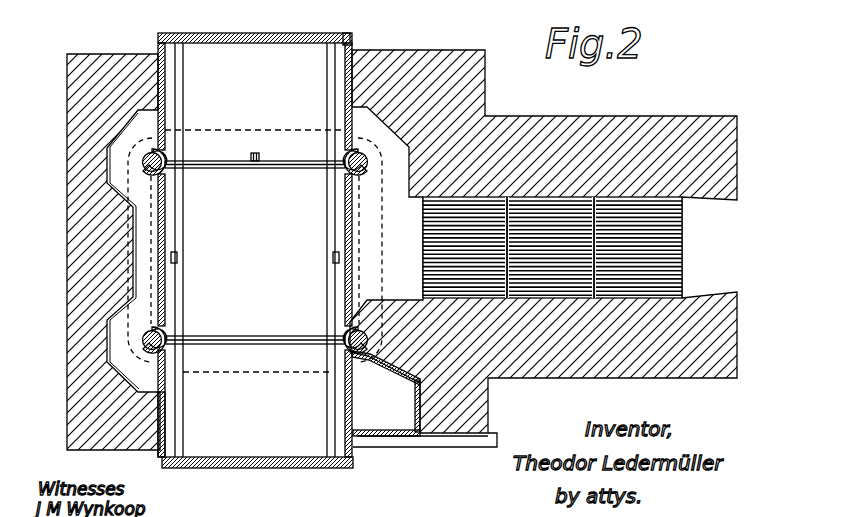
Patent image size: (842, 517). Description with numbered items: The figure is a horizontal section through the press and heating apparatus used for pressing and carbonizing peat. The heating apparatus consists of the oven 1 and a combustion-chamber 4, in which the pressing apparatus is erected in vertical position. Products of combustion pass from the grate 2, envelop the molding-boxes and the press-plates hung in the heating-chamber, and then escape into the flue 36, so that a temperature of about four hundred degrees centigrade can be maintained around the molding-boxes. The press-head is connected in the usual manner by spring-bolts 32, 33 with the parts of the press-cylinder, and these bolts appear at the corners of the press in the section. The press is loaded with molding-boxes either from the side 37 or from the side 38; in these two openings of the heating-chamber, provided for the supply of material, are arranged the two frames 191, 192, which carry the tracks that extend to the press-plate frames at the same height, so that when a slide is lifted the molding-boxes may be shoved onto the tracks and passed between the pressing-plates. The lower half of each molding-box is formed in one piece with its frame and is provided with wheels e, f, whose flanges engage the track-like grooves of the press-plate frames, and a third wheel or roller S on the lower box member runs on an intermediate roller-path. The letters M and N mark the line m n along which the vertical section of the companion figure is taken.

The oven 1 is at (485, 100).
The grate 2 is at (665, 258).
The combustion-chamber 4 is at (281, 250).
The spring-bolt 32 is at (160, 170).
The spring-bolt 33 is at (348, 170).
The flue 36 is at (386, 393).
The side 37 is at (257, 475).
The side 38 is at (254, 25).
The frame 191 is at (165, 452).
The frame 192 is at (352, 40).
The third wheel or roller S is at (259, 154).
The wheel e is at (177, 258).
The wheel f is at (333, 258).
The section line m n M is at (255, 5).
The section line m n N is at (258, 474).